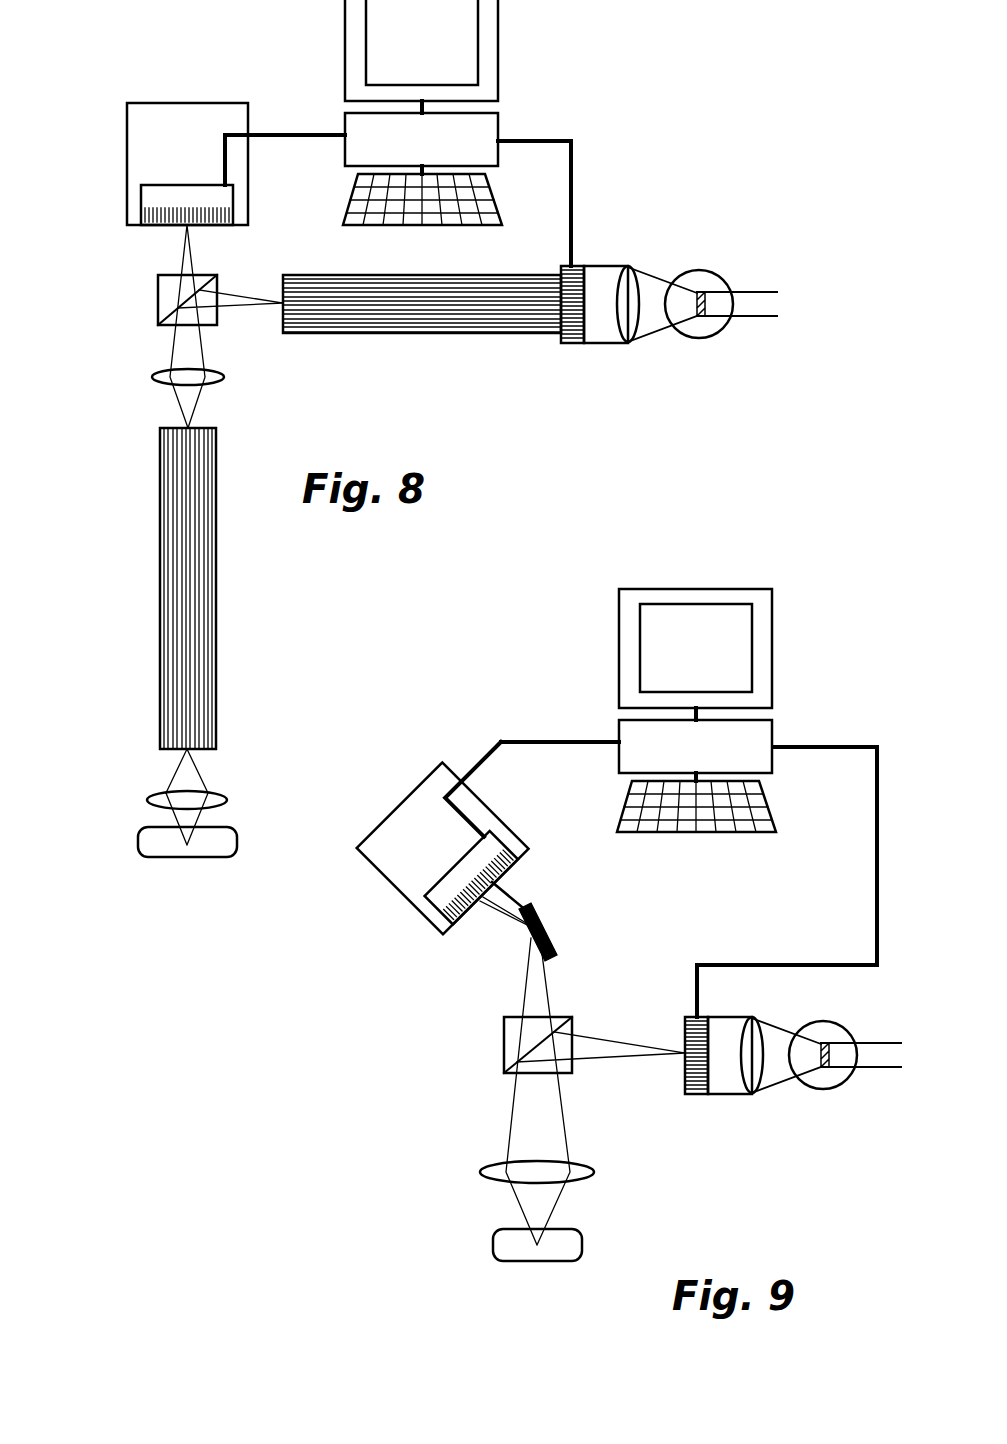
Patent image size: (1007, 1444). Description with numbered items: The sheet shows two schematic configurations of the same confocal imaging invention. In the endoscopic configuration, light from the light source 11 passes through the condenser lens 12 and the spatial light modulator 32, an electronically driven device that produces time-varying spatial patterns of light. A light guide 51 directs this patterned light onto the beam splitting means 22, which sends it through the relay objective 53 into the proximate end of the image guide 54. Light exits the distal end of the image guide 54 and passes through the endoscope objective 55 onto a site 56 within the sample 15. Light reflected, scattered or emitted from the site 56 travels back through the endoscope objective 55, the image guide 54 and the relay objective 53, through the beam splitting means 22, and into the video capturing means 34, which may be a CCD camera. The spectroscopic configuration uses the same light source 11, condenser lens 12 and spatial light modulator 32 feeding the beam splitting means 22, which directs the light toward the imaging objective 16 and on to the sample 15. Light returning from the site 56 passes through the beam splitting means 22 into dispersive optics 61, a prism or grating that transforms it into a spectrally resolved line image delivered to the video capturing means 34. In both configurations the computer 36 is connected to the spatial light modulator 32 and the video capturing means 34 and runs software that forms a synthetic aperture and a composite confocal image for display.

In FIG. 8, the light source 11 is at (698, 340).
In FIG. 9, the light source 11 is at (845, 1103).
In FIG. 8, the condenser lens 12 is at (628, 344).
In FIG. 9, the condenser lens 12 is at (764, 1101).
In FIG. 8, the sample 15 is at (138, 843).
In FIG. 9, the sample 15 is at (493, 1247).
In FIG. 9, the imaging objective 16 is at (482, 1172).
In FIG. 8, the beam splitting means 22 is at (158, 298).
In FIG. 9, the beam splitting means 22 is at (504, 1040).
In FIG. 8, the spatial light modulator 32 is at (572, 344).
In FIG. 9, the spatial light modulator 32 is at (703, 1101).
In FIG. 8, the video capturing means 34 is at (127, 190).
In FIG. 9, the video capturing means 34 is at (403, 895).
In FIG. 8, the computer 36 is at (345, 41).
In FIG. 9, the computer 36 is at (619, 650).
In FIG. 8, the light guide 51 is at (425, 333).
In FIG. 8, the relay objective 53 is at (152, 378).
In FIG. 8, the image guide 54 is at (160, 586).
In FIG. 8, the endoscope objective 55 is at (147, 800).
In FIG. 8, the site 56 is at (187, 847).
In FIG. 9, the dispersive optics 61 is at (547, 932).